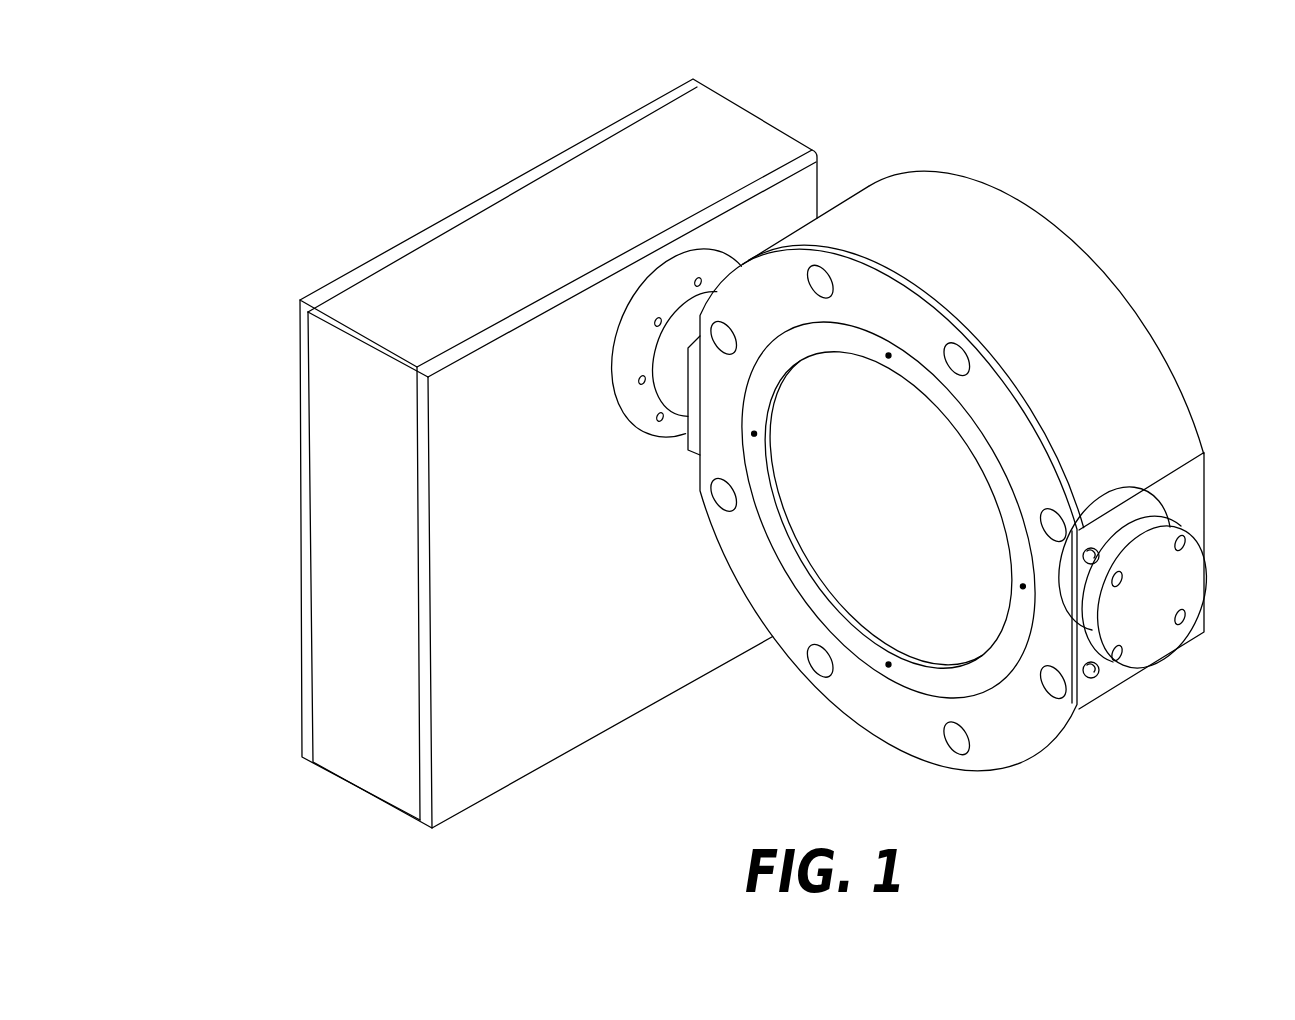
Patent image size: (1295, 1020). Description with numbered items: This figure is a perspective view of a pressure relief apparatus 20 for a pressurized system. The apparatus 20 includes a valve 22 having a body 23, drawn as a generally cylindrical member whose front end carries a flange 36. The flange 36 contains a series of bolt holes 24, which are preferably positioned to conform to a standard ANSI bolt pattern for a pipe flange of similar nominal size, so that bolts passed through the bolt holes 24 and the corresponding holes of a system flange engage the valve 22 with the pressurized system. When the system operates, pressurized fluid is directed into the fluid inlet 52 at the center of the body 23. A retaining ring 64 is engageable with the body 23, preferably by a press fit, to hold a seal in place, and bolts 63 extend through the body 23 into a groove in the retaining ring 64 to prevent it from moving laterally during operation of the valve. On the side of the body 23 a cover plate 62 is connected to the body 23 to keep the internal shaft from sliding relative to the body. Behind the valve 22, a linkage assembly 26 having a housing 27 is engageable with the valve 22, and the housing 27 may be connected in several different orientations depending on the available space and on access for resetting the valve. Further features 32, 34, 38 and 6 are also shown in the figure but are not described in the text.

The pressure relief apparatus 20 is at (862, 108).
The valve 22 is at (1110, 273).
The body 23 is at (1170, 440).
The bolt holes 24 is at (819, 283).
The linkage assembly 26 is at (346, 245).
The housing 27 is at (355, 301).
The side port flange 32 is at (688, 292).
The port flange holes 34 is at (655, 323).
The flange 36 is at (872, 712).
The bore 38 is at (790, 530).
The fluid inlet 52 is at (886, 512).
The cover plate 62 is at (1185, 575).
The bolts 63 is at (1093, 549).
The retaining ring 64 is at (808, 593).
The port bolt holes 6 is at (1188, 545).